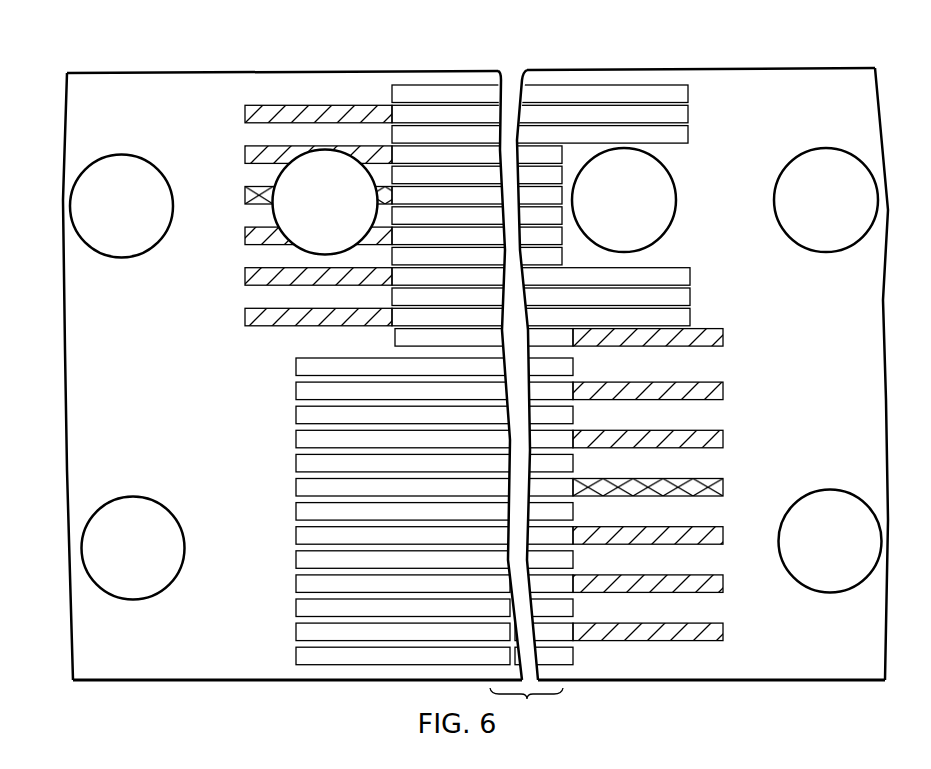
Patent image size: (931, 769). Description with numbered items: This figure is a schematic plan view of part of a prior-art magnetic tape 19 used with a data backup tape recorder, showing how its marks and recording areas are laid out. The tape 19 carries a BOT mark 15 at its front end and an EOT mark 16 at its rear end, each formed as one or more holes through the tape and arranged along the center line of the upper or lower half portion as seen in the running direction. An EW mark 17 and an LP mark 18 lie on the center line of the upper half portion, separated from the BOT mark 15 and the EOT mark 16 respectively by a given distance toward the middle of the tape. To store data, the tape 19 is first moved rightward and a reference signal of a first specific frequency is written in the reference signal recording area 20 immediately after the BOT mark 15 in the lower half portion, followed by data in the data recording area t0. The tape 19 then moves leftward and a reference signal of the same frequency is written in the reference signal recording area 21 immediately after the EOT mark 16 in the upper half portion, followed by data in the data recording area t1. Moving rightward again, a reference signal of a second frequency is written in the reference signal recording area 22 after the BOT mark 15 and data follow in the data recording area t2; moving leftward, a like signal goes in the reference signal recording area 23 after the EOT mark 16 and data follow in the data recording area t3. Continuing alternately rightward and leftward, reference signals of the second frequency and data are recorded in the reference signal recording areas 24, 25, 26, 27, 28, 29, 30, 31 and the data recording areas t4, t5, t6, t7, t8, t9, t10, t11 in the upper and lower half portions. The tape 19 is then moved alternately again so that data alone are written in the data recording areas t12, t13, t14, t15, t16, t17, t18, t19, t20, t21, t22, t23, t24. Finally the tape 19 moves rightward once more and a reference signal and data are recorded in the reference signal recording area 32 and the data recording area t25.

The BOT mark 15 is at (836, 158).
The EOT mark 16 is at (122, 172).
The EW mark 17 is at (328, 170).
The LP mark 18 is at (640, 163).
The magnetic tape 19 is at (180, 672).
The reference signal recording area 20 is at (723, 487).
The reference signal recording area 21 is at (245, 195).
The reference signal recording area 22 is at (723, 535).
The reference signal recording area 23 is at (245, 236).
The reference signal recording area 24 is at (723, 439).
The reference signal recording area 25 is at (245, 154).
The reference signal recording area 26 is at (723, 584).
The reference signal recording area 27 is at (245, 276).
The reference signal recording area 28 is at (723, 391).
The reference signal recording area 29 is at (245, 114).
The reference signal recording area 30 is at (723, 632).
The reference signal recording area 31 is at (245, 317).
The reference signal recording area 32 is at (723, 337).
The data recording area t0 is at (304, 483).
The data recording area t1 is at (562, 195).
The data recording area t2 is at (304, 531).
The data recording area t3 is at (562, 236).
The data recording area t4 is at (304, 435).
The data recording area t5 is at (562, 155).
The data recording area t6 is at (304, 580).
The data recording area t7 is at (690, 276).
The data recording area t8 is at (304, 387).
The data recording area t9 is at (688, 114).
The data recording area t10 is at (304, 628).
The data recording area t11 is at (690, 317).
The data recording area t12 is at (304, 459).
The data recording area t13 is at (562, 175).
The data recording area t14 is at (304, 507).
The data recording area t15 is at (562, 216).
The data recording area t16 is at (304, 411).
The data recording area t17 is at (688, 134).
The data recording area t18 is at (304, 556).
The data recording area t19 is at (562, 256).
The data recording area t20 is at (304, 363).
The data recording area t21 is at (688, 94).
The data recording area t22 is at (304, 604).
The data recording area t23 is at (690, 297).
The data recording area t24 is at (304, 652).
The data recording area t25 is at (405, 343).